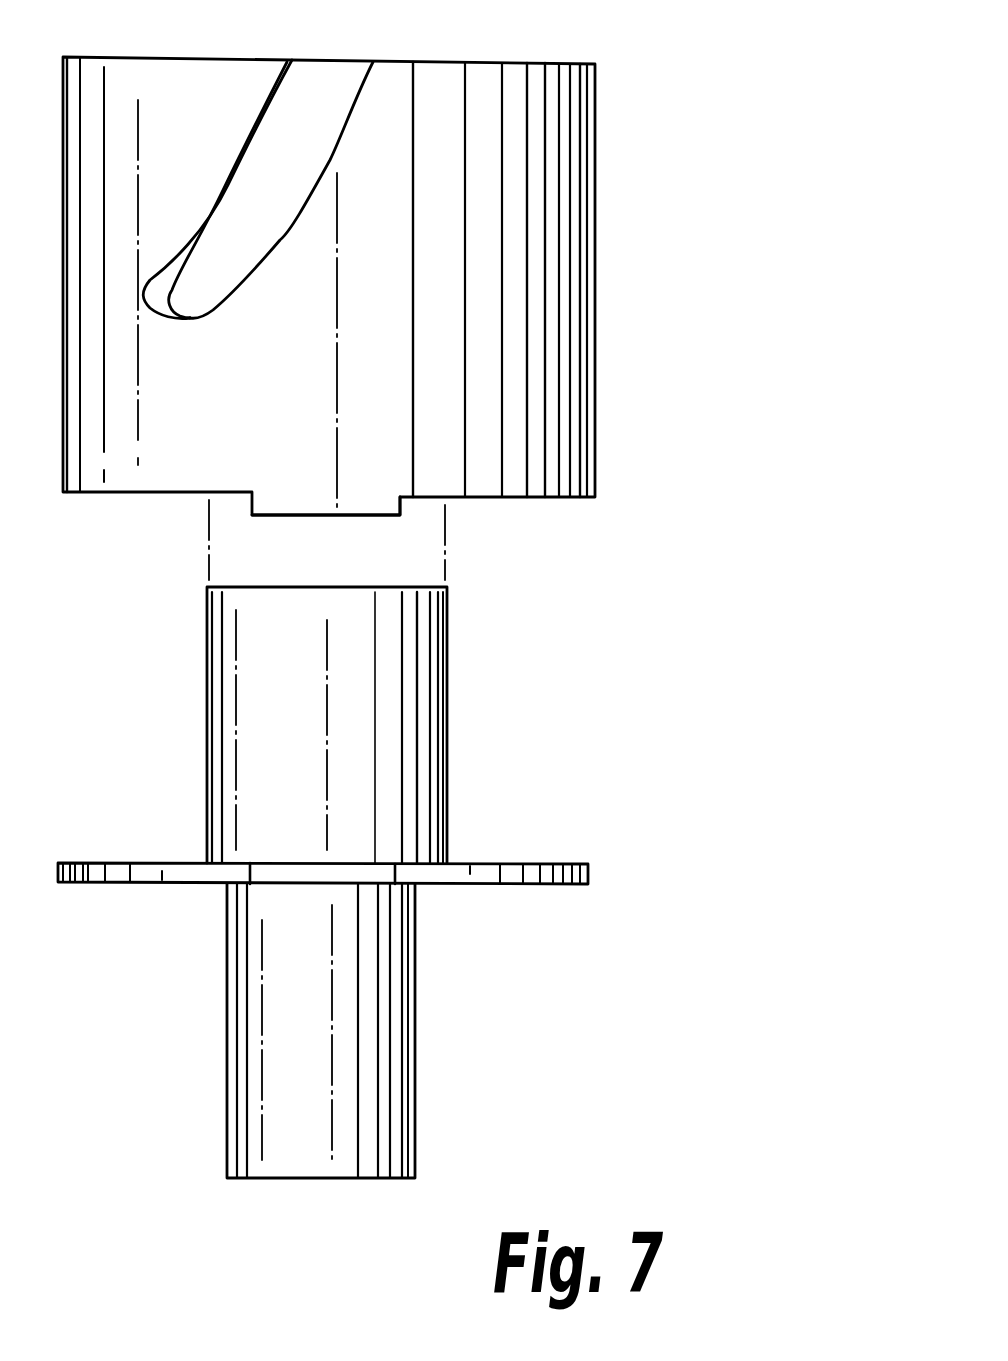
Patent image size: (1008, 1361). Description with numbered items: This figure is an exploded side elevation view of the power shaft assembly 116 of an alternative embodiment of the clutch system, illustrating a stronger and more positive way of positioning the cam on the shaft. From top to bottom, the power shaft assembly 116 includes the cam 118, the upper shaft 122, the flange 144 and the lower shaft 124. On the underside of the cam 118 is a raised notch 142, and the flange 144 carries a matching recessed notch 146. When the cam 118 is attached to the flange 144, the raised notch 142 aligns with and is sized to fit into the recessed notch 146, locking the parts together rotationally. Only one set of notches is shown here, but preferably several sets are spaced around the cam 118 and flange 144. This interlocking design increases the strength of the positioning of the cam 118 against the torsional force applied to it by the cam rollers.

The power shaft assembly 116 is at (698, 101).
The cam 118 is at (596, 243).
The raised notch 142 is at (402, 516).
The upper shaft 122 is at (448, 693).
The flange 144 is at (570, 863).
The recessed notch 146 is at (298, 870).
The lower shaft 124 is at (383, 1122).